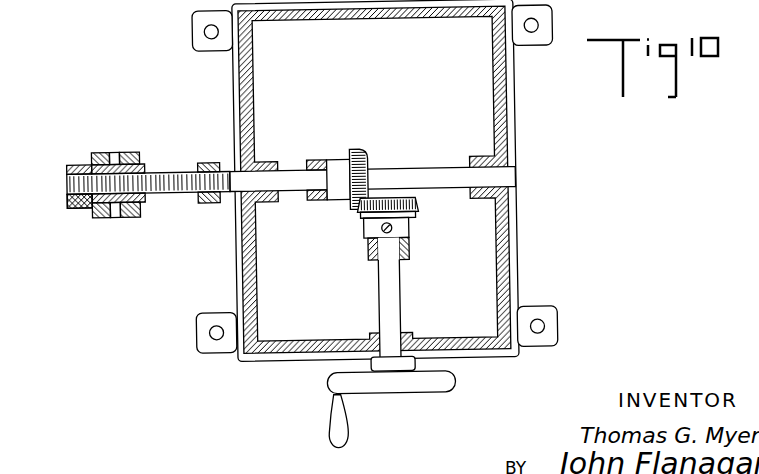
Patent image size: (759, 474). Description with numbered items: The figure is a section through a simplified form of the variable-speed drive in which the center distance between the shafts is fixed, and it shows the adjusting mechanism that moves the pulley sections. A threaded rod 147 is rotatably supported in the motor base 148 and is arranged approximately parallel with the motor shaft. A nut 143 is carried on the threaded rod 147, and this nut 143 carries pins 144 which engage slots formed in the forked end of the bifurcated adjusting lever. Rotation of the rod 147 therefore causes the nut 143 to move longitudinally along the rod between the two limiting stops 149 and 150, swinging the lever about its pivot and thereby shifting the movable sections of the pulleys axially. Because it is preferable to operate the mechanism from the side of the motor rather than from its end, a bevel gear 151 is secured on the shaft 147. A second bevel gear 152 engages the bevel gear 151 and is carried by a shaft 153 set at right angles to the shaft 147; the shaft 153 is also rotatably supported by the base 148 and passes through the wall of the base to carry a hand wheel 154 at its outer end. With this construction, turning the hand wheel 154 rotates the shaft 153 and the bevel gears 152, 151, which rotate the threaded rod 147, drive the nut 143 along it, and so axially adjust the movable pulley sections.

The nut 143 is at (88, 201).
The pins 144 is at (118, 148).
The threaded rod 147 is at (517, 178).
The motor base 148 is at (510, 264).
The limiting stop 149 is at (78, 165).
The limiting stop 150 is at (206, 157).
The bevel gear 151 is at (357, 150).
The bevel gear 152 is at (412, 207).
The shaft 153 is at (396, 298).
The hand wheel 154 is at (408, 394).